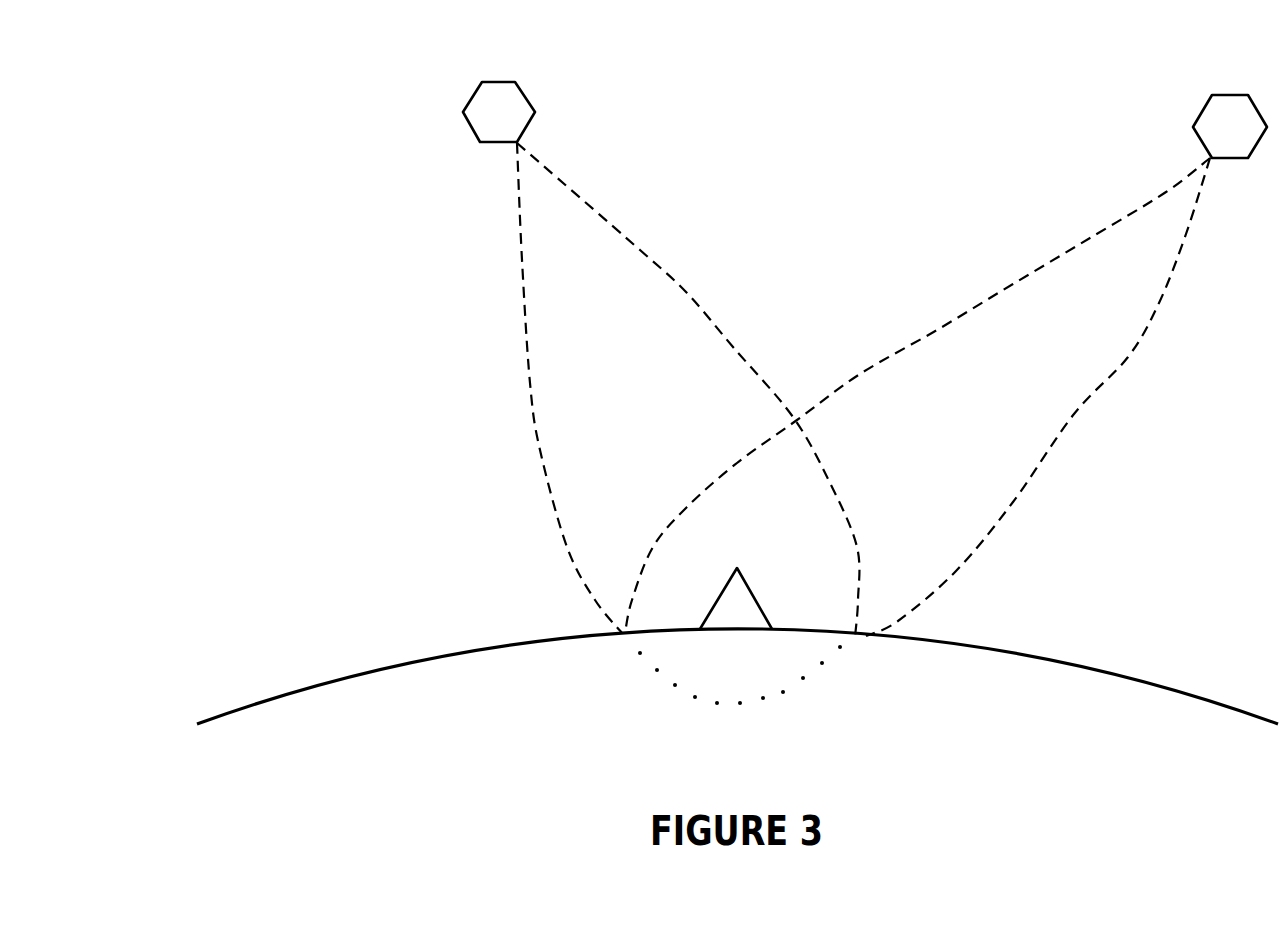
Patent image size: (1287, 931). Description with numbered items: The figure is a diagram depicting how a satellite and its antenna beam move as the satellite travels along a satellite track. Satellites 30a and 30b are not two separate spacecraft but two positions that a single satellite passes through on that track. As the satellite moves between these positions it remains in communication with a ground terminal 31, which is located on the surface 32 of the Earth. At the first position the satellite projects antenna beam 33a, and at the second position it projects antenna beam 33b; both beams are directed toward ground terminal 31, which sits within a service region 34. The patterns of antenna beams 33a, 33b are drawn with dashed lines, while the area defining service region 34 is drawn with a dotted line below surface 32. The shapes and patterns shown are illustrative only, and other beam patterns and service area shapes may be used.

The satellite 30a is at (463, 102).
The satellite 30b is at (1200, 112).
The ground terminal 31 is at (752, 595).
The surface of the Earth 32 is at (1212, 705).
The antenna beam 33a is at (530, 383).
The antenna beam 33b is at (1074, 414).
The service region 34 is at (785, 695).